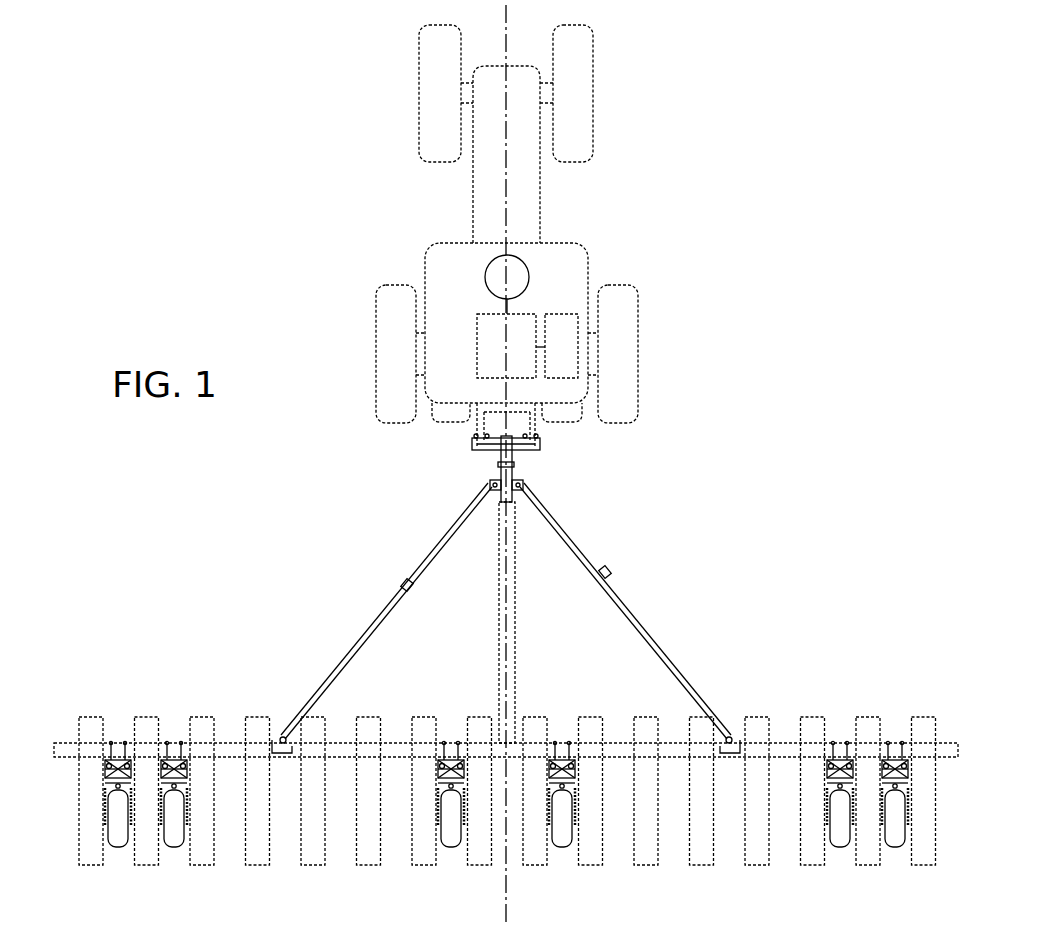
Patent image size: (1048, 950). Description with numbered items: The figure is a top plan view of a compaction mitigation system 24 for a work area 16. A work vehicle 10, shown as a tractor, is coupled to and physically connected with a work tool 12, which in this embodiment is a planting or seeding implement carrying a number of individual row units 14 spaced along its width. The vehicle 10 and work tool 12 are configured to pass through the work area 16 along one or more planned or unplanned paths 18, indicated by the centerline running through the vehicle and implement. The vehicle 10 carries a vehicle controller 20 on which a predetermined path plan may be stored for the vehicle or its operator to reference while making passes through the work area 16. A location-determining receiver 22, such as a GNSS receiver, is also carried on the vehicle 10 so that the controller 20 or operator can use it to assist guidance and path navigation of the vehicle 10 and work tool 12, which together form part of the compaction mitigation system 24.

The work vehicle 10 is at (522, 213).
The work tool 12 is at (792, 672).
The row units 14 is at (255, 727).
The work area 16 is at (898, 133).
The path 18 is at (510, 907).
The vehicle controller 20 is at (512, 357).
The location-determining receiver 22 is at (500, 276).
The compaction mitigation system 24 is at (327, 65).